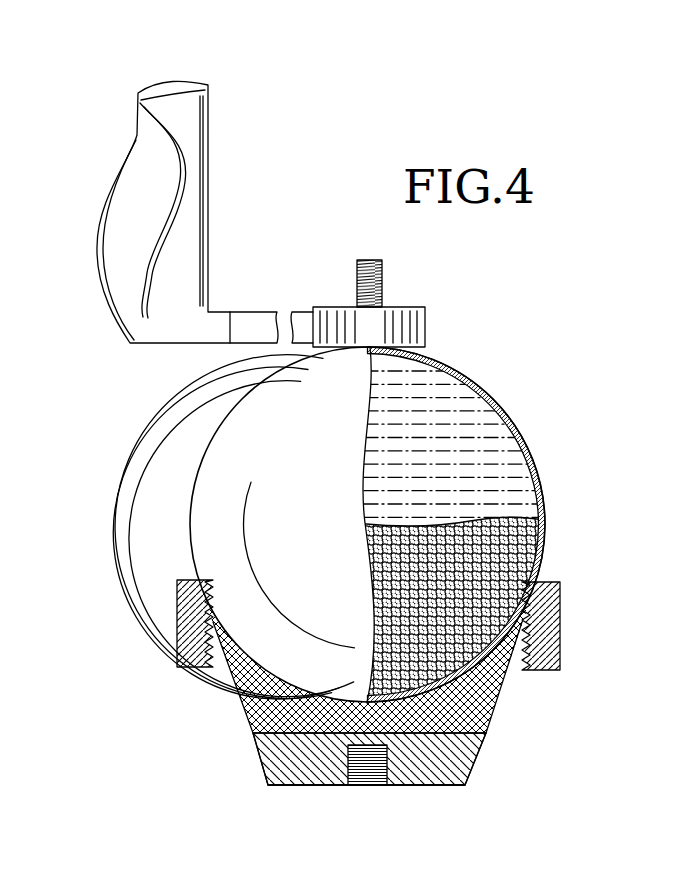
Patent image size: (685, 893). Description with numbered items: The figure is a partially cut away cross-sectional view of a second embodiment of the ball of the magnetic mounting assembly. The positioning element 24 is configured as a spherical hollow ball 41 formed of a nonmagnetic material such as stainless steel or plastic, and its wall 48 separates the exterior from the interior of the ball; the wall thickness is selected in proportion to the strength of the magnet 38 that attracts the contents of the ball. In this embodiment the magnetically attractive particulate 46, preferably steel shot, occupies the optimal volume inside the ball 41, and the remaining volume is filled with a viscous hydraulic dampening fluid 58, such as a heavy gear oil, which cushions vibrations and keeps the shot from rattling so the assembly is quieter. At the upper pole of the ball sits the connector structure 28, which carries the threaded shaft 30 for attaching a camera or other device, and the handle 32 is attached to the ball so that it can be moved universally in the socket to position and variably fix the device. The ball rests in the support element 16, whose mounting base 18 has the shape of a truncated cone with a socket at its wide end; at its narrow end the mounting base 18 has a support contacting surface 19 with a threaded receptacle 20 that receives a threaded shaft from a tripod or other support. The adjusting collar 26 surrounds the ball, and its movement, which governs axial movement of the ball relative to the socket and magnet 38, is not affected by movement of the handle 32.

The support element 16 is at (242, 752).
The mounting base 18 is at (457, 762).
The support contacting surface 19 is at (297, 788).
The threaded receptacle 20 is at (367, 773).
The positioning element 24 is at (177, 478).
The adjusting collar 26 is at (565, 637).
The connector structure 28 is at (320, 306).
The threaded shaft 30 is at (383, 285).
The handle 32 is at (137, 143).
The magnet 38 is at (272, 712).
The hollow ball 41 is at (208, 438).
The magnetically attractive particulate 46 is at (540, 553).
The wall 48 is at (540, 480).
The viscous hydraulic dampening fluid 58 is at (480, 452).